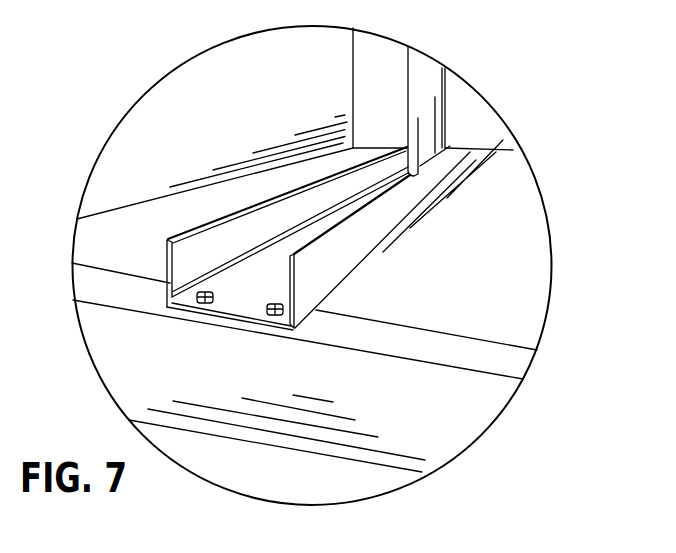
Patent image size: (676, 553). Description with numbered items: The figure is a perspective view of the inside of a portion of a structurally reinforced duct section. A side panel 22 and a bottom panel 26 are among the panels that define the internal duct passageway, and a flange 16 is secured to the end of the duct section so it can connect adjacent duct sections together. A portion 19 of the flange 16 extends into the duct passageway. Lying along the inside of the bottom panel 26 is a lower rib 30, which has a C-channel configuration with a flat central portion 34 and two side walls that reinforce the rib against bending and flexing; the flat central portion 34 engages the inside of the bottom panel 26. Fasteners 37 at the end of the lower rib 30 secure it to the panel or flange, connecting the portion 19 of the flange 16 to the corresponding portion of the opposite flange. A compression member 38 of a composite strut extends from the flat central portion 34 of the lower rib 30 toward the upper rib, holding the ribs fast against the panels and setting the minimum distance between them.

The flange 16 is at (145, 295).
The portion of the flange 19 is at (440, 352).
The side panel 22 is at (217, 119).
The bottom panel 26 is at (465, 300).
The lower rib 30 is at (318, 238).
The flat central portion 34 is at (263, 275).
The fastener 37 is at (205, 292).
The compression member 38 is at (408, 83).